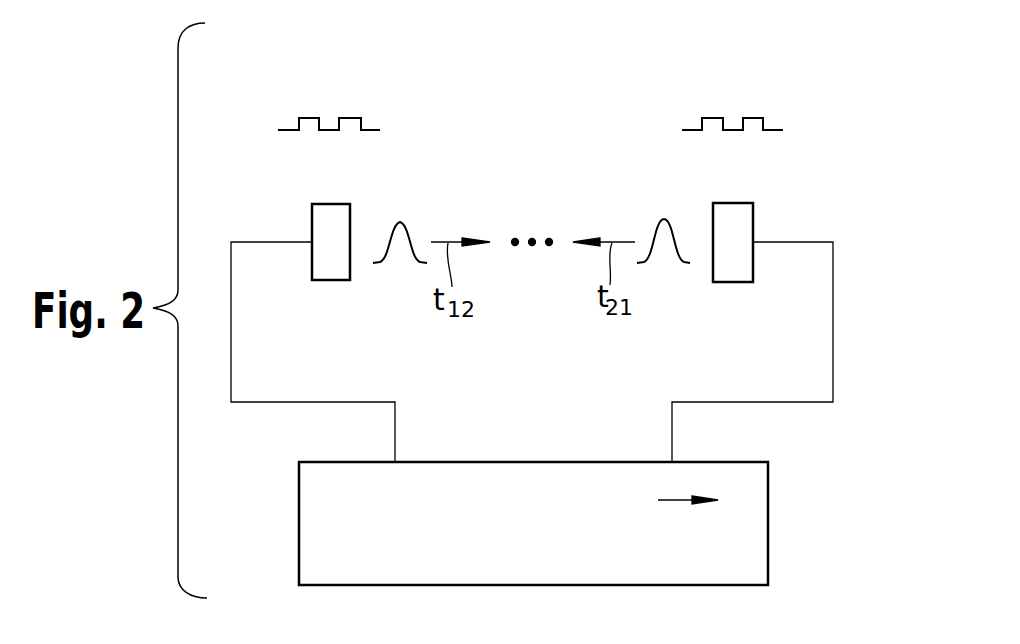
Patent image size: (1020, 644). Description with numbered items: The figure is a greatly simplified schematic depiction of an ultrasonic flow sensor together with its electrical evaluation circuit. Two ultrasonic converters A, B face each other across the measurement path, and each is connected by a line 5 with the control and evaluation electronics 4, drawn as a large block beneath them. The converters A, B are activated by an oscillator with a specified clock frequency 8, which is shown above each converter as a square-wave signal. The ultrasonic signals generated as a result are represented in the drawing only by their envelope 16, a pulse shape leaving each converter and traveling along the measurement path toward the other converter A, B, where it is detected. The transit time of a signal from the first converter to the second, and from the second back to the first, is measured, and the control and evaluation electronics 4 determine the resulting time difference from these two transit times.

The control and evaluation electronics 4 is at (747, 540).
The connecting line 5 is at (232, 337).
The clock frequency 8 is at (343, 118).
The envelope 16 is at (413, 232).
The ultrasonic converter A is at (337, 227).
The ultrasonic converter B is at (740, 227).